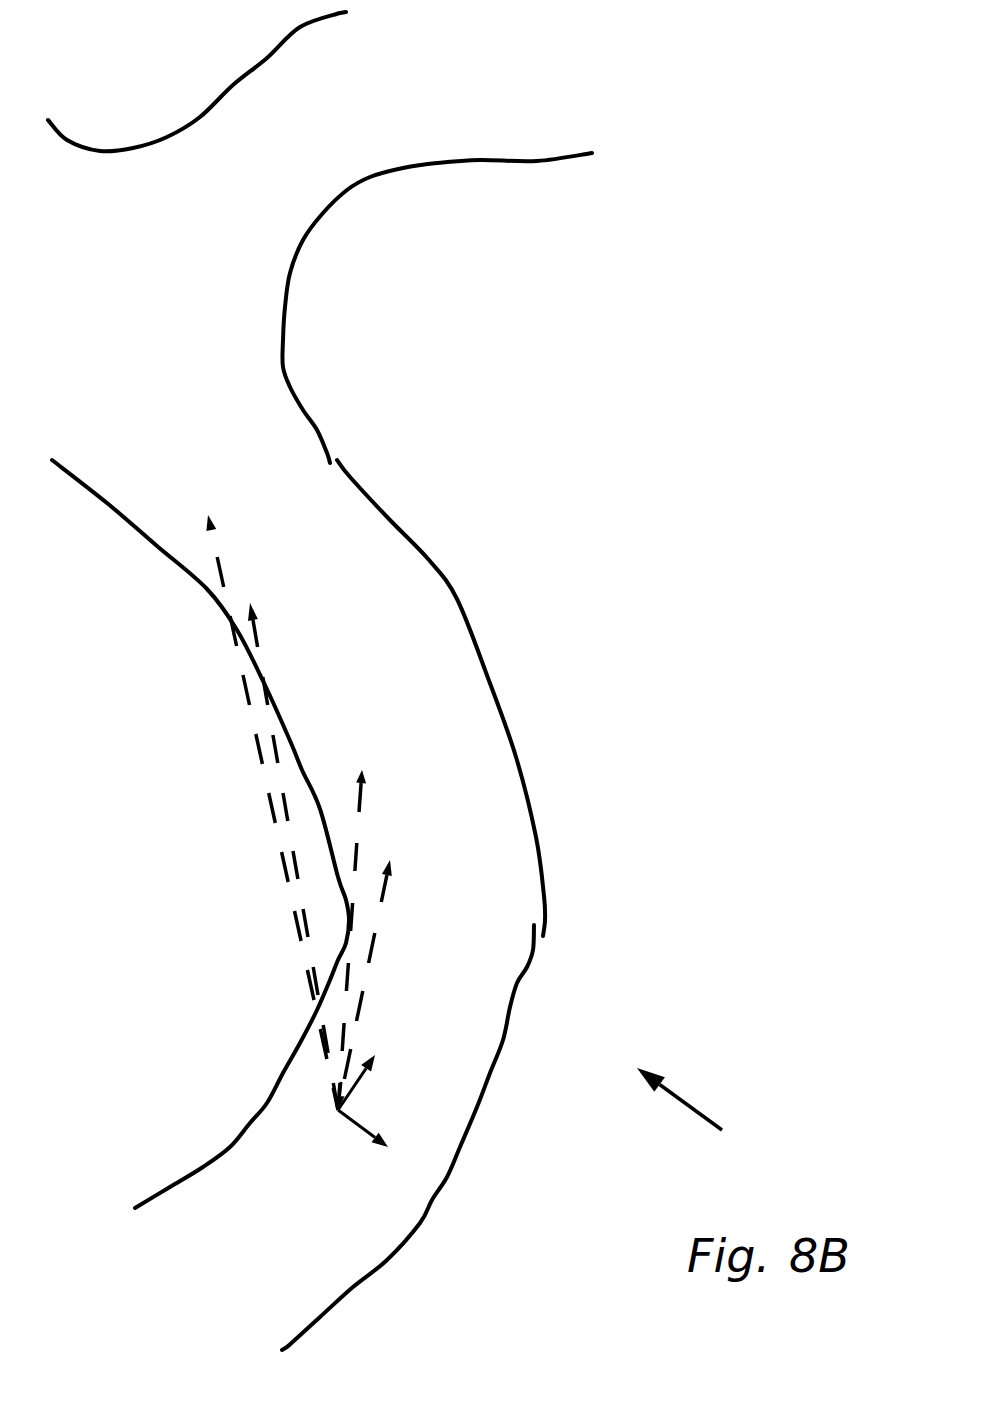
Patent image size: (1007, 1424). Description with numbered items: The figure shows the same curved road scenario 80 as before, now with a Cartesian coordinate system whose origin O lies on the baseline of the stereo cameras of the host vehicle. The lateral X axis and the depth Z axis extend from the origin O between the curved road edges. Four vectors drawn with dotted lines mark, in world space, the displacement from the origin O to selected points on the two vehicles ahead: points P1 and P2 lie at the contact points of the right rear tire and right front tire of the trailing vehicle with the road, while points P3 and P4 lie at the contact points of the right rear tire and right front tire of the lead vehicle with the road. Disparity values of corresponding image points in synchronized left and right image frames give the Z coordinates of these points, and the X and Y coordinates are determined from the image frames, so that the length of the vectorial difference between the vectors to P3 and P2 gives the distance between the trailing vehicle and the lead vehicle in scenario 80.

The road scenario 80 is at (697, 1115).
The selected point P1 is at (376, 975).
The selected point P2 is at (360, 926).
The selected point P3 is at (290, 841).
The selected point P4 is at (270, 799).
The origin O is at (331, 1107).
The X axis X is at (370, 1138).
The Z axis Z is at (366, 1075).